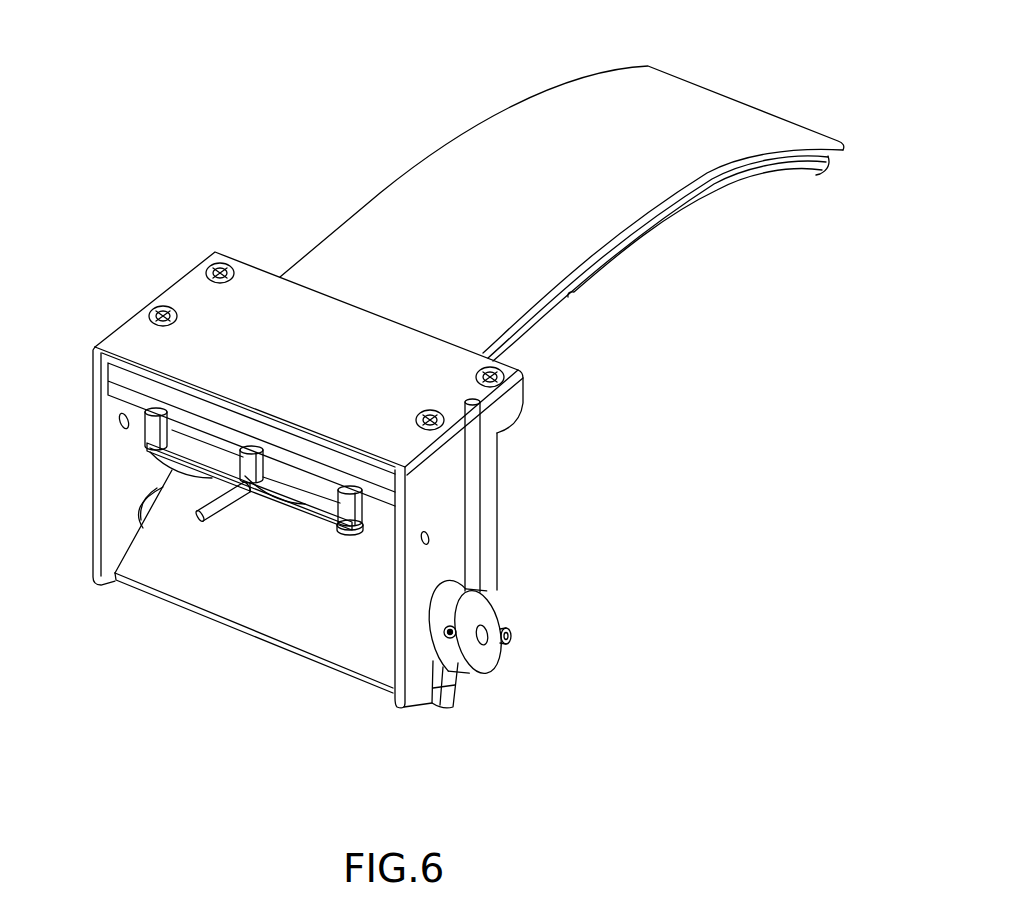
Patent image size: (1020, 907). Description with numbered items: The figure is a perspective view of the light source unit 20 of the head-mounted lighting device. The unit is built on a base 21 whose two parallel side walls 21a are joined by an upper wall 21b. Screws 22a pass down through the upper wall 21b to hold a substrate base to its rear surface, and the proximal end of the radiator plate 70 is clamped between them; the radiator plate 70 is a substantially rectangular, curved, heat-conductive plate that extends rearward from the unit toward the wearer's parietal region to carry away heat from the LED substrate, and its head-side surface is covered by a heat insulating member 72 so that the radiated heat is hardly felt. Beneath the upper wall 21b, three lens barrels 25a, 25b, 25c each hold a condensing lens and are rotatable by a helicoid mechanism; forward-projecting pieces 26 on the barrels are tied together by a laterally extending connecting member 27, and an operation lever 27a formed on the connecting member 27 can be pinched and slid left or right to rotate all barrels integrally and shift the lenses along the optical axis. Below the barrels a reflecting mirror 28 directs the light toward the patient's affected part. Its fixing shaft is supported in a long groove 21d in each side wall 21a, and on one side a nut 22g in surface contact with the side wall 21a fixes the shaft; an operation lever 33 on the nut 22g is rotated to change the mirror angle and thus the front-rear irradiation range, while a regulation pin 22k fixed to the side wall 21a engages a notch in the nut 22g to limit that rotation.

The light source unit 20 is at (417, 73).
The base 21 is at (253, 258).
The side wall 21a is at (113, 407).
The upper wall 21b is at (347, 323).
The long groove 21d is at (452, 695).
The screw 22a is at (207, 261).
The nut 22g is at (492, 607).
The regulation pin 22k is at (512, 636).
The lens barrel 25a is at (160, 463).
The lens barrel 25b is at (300, 482).
The lens barrel 25c is at (375, 530).
The projecting piece 26 is at (253, 447).
The connecting member 27 is at (207, 547).
The operation lever 27a is at (218, 512).
The reflecting mirror 28 is at (287, 597).
The operation lever 33 is at (473, 485).
The radiator plate 70 is at (598, 110).
The heat insulating member 72 is at (763, 178).